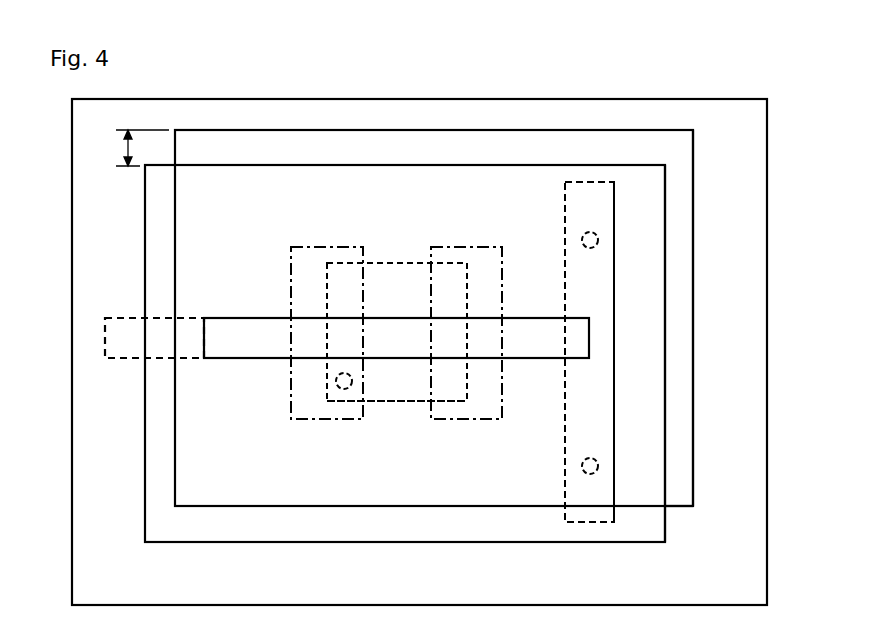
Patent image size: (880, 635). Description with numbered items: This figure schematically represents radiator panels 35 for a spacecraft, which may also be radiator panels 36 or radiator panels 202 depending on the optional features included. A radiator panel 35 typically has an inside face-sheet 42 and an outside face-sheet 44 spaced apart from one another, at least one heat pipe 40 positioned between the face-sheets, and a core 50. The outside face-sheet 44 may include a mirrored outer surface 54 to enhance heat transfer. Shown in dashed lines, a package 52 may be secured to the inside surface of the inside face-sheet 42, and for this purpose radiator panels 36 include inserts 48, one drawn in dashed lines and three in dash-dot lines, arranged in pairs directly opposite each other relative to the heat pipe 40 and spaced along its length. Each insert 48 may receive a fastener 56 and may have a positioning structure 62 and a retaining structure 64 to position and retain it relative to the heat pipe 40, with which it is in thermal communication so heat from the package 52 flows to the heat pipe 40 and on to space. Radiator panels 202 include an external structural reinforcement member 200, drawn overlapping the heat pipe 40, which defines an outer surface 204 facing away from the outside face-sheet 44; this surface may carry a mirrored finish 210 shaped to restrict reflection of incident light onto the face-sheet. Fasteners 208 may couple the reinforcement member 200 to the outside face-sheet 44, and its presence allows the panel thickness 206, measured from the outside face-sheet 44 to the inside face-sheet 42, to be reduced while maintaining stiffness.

The radiator panel 35 is at (722, 99).
The radiator panel 36 is at (604, 99).
The heat pipe 40 is at (168, 360).
The inside face-sheet 42 is at (693, 165).
The outside face-sheet 44 is at (665, 340).
The insert 48 is at (300, 247).
The core 50 is at (678, 520).
The package 52 is at (380, 263).
The mirrored outer surface 54 is at (222, 515).
The fastener 56 is at (353, 380).
The positioning structure 62 is at (302, 410).
The retaining structure 64 is at (312, 410).
The external structural reinforcement member 200 is at (565, 508).
The radiator panel 202 is at (496, 99).
The outer surface 204 is at (610, 218).
The thickness 206 is at (124, 148).
The fastener 208 is at (599, 238).
The mirrored finish 210 is at (600, 427).